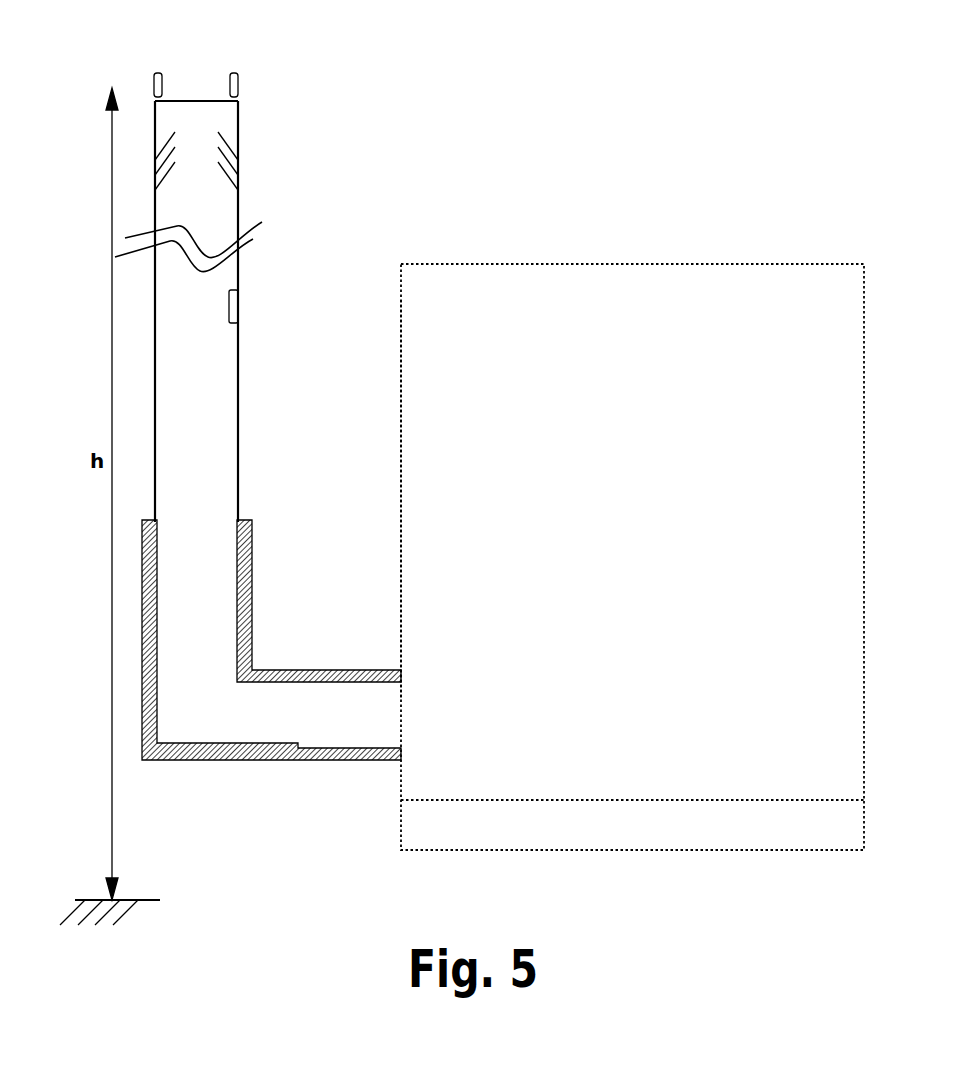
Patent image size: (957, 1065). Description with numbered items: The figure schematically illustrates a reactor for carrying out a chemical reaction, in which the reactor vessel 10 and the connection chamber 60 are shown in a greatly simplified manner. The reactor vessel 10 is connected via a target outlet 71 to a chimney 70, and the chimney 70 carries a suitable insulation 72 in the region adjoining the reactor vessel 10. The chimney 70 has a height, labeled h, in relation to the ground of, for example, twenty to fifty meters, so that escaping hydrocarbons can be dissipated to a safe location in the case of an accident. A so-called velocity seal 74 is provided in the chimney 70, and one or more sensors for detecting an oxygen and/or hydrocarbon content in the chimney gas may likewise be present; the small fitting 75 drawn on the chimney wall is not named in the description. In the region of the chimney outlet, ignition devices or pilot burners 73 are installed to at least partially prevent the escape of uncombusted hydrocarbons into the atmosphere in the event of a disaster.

The reactor vessel 10 is at (400, 485).
The connection chamber 60 is at (757, 850).
The chimney 70 is at (228, 795).
The target outlet 71 is at (400, 710).
The insulation 72 is at (200, 763).
The pilot burners 73 is at (153, 87).
The velocity seal 74 is at (238, 173).
The vent fitting 75 is at (238, 307).